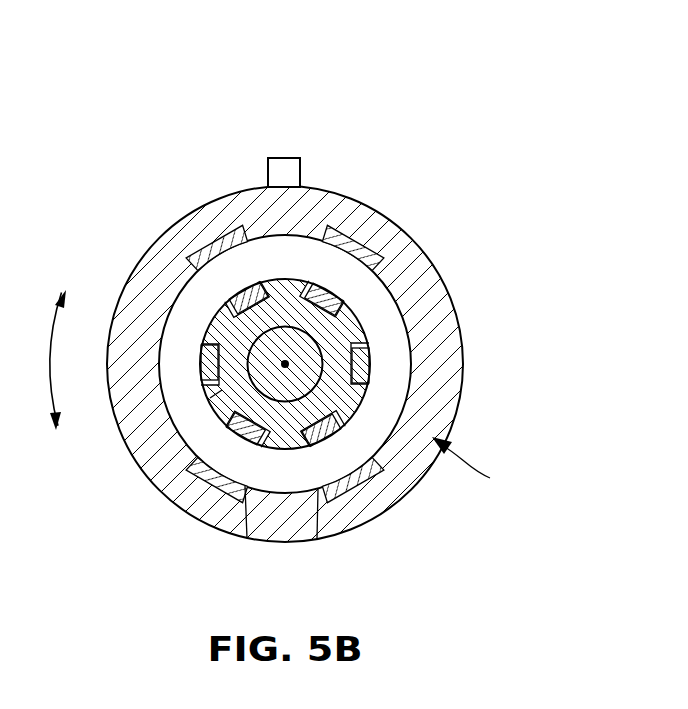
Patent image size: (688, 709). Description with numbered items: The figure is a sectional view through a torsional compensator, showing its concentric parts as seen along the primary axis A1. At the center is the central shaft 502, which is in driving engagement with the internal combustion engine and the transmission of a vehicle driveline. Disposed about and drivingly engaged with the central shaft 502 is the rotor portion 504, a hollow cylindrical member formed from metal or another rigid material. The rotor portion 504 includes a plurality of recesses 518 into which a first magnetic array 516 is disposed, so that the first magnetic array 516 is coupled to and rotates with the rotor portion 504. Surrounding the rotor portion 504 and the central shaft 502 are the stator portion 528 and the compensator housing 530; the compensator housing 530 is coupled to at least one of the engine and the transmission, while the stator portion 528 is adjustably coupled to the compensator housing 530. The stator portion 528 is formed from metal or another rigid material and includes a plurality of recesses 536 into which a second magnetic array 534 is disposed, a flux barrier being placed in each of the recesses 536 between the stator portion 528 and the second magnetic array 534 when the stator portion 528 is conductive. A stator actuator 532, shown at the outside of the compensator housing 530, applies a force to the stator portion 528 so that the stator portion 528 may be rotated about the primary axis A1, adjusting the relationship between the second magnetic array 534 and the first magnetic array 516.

The central shaft 502 is at (296, 362).
The rotor portion 504 is at (330, 400).
The first magnetic array 516 is at (322, 282).
The recesses 518 is at (230, 412).
The stator portion 528 is at (482, 463).
The compensator housing 530 is at (462, 332).
The stator actuator 532 is at (285, 157).
The second magnetic array 534 is at (222, 240).
The recesses 536 is at (230, 530).
The primary axis A1 is at (284, 362).